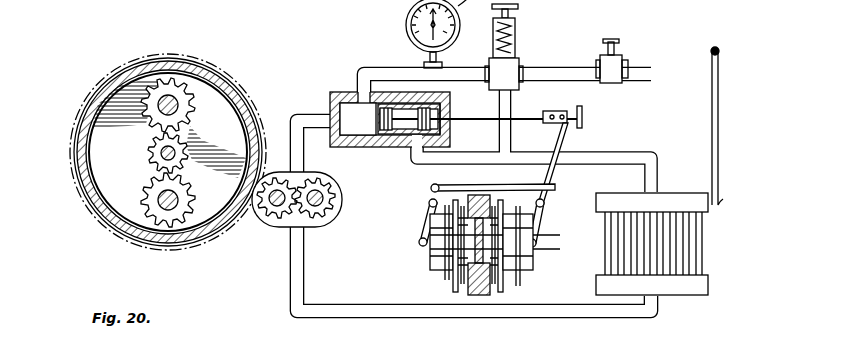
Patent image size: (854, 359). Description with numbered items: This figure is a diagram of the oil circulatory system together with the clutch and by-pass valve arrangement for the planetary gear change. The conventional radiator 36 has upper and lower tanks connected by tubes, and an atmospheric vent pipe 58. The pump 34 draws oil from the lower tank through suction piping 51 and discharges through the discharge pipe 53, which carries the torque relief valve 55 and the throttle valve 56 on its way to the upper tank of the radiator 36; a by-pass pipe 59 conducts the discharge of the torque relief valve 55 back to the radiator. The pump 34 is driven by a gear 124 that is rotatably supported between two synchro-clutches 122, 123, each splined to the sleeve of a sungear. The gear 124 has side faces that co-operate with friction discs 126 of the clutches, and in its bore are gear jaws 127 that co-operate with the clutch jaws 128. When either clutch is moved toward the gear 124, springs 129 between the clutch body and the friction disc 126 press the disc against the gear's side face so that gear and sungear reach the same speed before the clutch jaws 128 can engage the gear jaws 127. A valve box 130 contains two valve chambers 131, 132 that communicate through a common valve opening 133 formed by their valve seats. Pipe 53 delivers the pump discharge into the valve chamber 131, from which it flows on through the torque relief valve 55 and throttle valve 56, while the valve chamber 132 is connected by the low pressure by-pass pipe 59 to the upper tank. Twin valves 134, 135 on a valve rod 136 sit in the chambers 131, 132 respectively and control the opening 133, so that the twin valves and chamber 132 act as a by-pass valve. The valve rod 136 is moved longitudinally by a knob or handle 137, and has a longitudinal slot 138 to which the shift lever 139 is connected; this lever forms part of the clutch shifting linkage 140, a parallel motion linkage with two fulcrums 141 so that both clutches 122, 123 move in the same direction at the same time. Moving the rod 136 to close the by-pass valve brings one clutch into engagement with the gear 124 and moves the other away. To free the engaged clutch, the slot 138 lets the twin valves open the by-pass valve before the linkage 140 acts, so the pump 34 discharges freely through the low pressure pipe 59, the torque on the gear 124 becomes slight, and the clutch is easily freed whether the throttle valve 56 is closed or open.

The gear 124 is at (210, 58).
The pump 34 is at (268, 224).
The discharge pipe 53 is at (296, 124).
The suction piping 51 is at (322, 317).
The by-pass pipe 59 is at (653, 172).
The valve box 130 is at (350, 92).
The valve chamber 131 is at (330, 100).
The valve chamber 132 is at (436, 108).
The valve opening 133 is at (396, 112).
The twin valve 134 is at (372, 128).
The twin valve 135 is at (412, 130).
The valve rod 136 is at (465, 121).
The knob or handle 137 is at (582, 118).
The longitudinal slot 138 is at (554, 111).
The shift lever 139 is at (559, 146).
The clutch shifting linkage 140 is at (430, 190).
The fulcrums 141 is at (428, 204).
The synchro-clutch 122 is at (426, 248).
The synchro-clutch 123 is at (568, 243).
The friction discs 126 is at (452, 288).
The gear jaws 127 is at (485, 249).
The clutch jaws 128 is at (472, 270).
The springs 129 is at (454, 271).
The torque relief valve 55 is at (520, 62).
The throttle valve 56 is at (624, 60).
The atmospheric vent pipe 58 is at (719, 48).
The radiator 36 is at (706, 242).